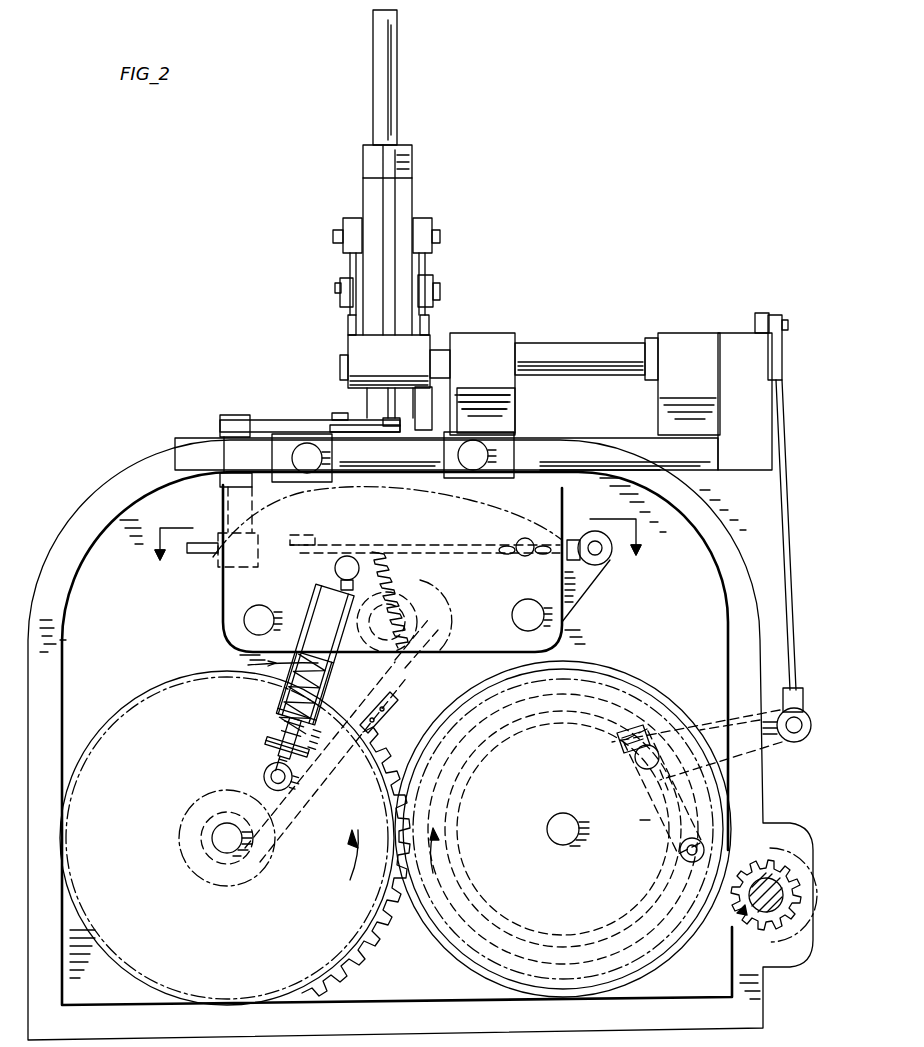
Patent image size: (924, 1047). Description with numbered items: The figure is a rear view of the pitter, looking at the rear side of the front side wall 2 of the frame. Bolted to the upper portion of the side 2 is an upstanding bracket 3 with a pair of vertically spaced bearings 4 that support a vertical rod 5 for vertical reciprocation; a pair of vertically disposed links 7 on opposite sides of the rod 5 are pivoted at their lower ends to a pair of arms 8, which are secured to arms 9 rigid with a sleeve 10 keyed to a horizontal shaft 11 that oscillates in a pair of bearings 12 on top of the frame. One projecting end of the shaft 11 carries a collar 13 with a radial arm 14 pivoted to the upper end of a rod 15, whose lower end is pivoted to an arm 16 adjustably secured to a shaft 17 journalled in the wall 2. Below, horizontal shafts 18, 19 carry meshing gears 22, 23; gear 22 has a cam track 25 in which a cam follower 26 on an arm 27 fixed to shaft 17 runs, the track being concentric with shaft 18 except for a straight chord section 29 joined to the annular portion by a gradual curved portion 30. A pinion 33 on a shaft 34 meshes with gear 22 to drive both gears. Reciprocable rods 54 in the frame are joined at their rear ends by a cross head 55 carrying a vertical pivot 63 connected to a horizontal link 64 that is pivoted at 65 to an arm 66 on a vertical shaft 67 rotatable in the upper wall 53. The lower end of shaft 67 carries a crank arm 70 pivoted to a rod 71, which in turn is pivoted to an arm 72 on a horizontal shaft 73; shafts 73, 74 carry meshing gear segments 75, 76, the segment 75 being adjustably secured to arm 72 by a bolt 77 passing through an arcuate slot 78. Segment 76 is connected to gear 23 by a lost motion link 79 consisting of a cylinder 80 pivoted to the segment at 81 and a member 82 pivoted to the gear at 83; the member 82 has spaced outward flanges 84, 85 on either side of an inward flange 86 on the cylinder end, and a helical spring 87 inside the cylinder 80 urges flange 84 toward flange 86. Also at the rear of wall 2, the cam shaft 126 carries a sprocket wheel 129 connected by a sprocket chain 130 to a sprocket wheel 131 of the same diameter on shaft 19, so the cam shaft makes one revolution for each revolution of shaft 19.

The side 2 is at (684, 614).
The upstanding bracket 3 is at (406, 200).
The bearings 4 is at (395, 552).
The vertical rod 5 is at (390, 103).
The links 7 is at (426, 268).
The arms 8 is at (430, 296).
The arms 9 is at (430, 314).
The sleeve 10 is at (392, 362).
The shaft 11 is at (590, 342).
The bearings 12 is at (688, 338).
The collar 13 is at (735, 334).
The arm 14 is at (760, 313).
The rod 15 is at (777, 476).
The arm 16 is at (712, 718).
The shaft 17 is at (614, 766).
The shaft 18 is at (572, 826).
The shaft 19 is at (212, 846).
The gear 22 is at (550, 890).
The gear 23 is at (280, 916).
The cam track 25 is at (554, 946).
The cam follower 26 is at (674, 874).
The arm 27 is at (676, 780).
The straight chord section 29 is at (644, 794).
The curved portion 30 is at (557, 724).
The pinion 33 is at (768, 836).
The shaft 34 is at (785, 898).
The upper wall 53 is at (547, 444).
The rods 54 is at (475, 450).
The cross head 55 is at (390, 450).
The vertical pivot 63 is at (400, 416).
The link 64 is at (335, 413).
The pivotal connection 65 is at (330, 408).
The arm 66 is at (266, 420).
The vertical shaft 67 is at (228, 415).
The crank arm 70 is at (273, 548).
The rod 71 is at (470, 546).
The arm 72 is at (578, 530).
The shaft 73 is at (516, 610).
The shaft 74 is at (246, 627).
The gear segment 75 is at (472, 584).
The gear segment 76 is at (303, 604).
The bolt 77 is at (522, 538).
The arcuate slot 78 is at (543, 546).
The lost motion link 79 is at (248, 658).
The cylinder 80 is at (330, 612).
The pivotal connection 81 is at (354, 556).
The member 82 is at (268, 720).
The pivotal connection 83 is at (293, 776).
The flange 84 is at (272, 708).
The flange 85 is at (277, 742).
The flange 86 is at (330, 725).
The helical spring 87 is at (326, 684).
The cam shaft 126 is at (412, 668).
The sprocket wheel 129 is at (437, 614).
The sprocket chain 130 is at (392, 704).
The sprocket wheel 131 is at (280, 836).